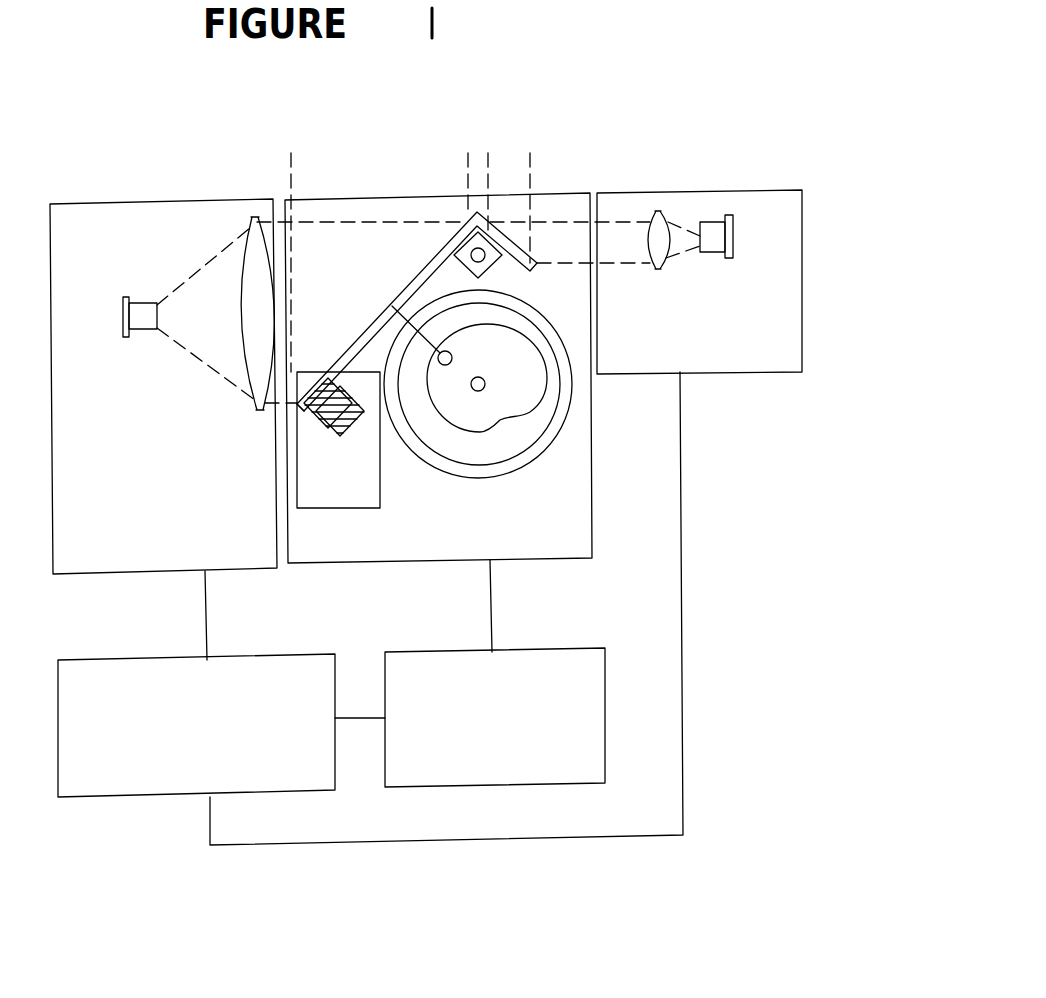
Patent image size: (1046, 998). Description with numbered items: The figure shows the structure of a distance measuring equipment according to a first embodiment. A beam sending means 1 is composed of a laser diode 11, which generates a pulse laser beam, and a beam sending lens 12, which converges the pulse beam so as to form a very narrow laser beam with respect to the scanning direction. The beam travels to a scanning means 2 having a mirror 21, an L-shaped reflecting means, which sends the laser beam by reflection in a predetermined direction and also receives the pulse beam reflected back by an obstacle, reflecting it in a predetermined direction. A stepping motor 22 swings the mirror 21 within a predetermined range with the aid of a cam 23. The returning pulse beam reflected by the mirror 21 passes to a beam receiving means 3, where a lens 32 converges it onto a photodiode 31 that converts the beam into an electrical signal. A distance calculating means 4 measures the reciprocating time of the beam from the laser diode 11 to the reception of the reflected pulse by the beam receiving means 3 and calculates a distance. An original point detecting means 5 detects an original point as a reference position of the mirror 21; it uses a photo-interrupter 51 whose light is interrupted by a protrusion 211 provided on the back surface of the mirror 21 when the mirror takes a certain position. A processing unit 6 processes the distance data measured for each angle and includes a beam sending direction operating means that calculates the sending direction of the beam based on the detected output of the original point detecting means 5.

The beam sending means 1 is at (737, 372).
The laser diode 11 is at (707, 252).
The beam sending lens 12 is at (655, 245).
The scanning means 2 is at (527, 560).
The mirror 21 is at (413, 273).
The stepping motor 22 is at (530, 455).
The cam 23 is at (503, 447).
The beam receiving means 3 is at (110, 574).
The photodiode 31 is at (142, 330).
The lens 32 is at (253, 258).
The distance calculating means 4 is at (115, 797).
The original point detecting means 5 is at (314, 510).
The photo-interrupter 51 is at (352, 428).
The protrusion 211 is at (345, 375).
The processing unit 6 is at (605, 733).